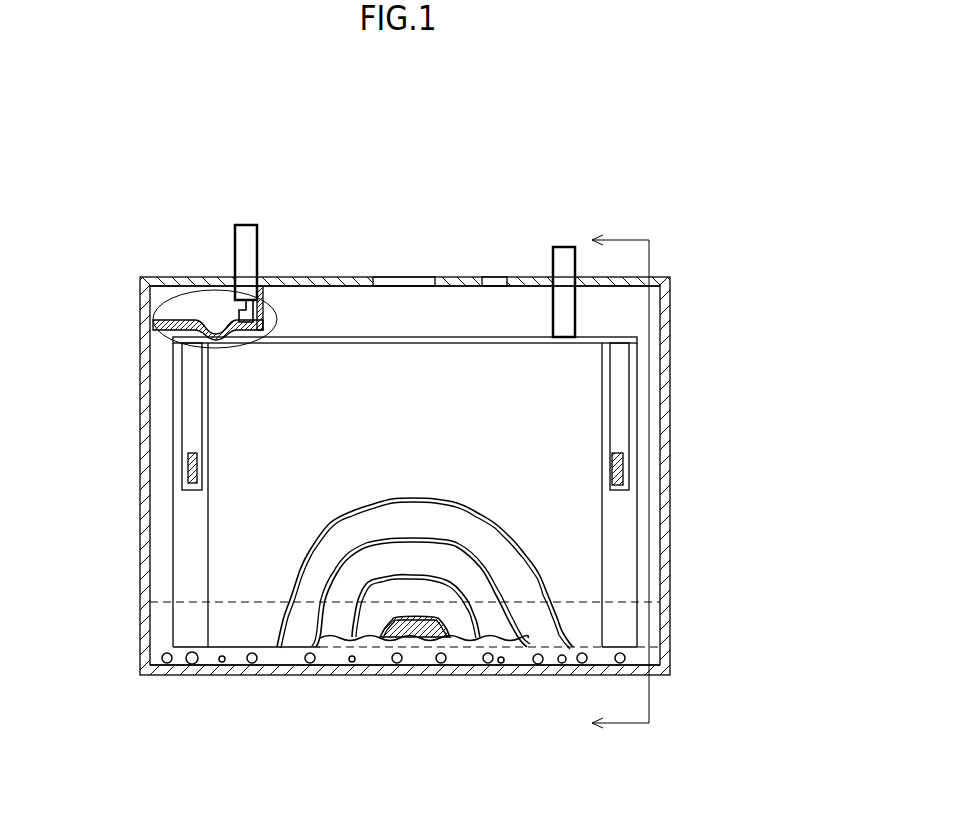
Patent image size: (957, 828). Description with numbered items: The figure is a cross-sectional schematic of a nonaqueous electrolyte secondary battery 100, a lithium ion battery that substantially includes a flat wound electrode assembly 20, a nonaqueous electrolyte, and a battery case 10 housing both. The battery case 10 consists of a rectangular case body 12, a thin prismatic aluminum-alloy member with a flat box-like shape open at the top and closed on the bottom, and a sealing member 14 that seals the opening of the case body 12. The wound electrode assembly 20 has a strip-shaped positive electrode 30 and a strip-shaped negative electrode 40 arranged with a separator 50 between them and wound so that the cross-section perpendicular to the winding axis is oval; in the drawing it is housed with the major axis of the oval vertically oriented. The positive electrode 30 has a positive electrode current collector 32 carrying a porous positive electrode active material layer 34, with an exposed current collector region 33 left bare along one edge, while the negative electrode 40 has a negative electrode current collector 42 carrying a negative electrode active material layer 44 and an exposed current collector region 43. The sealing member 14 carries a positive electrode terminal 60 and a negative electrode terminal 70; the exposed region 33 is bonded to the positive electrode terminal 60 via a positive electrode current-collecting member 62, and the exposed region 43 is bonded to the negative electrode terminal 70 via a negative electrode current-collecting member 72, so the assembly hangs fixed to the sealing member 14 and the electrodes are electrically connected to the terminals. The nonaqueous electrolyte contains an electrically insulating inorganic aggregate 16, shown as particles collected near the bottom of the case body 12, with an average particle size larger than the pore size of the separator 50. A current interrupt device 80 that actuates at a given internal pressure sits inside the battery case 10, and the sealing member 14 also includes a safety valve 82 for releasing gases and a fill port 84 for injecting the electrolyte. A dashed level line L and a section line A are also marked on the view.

The nonaqueous electrolyte secondary battery 100 is at (668, 177).
The battery case 10 is at (672, 440).
The case body 12 is at (672, 618).
The sealing member 14 is at (285, 277).
The inorganic aggregate 16 is at (533, 665).
The flat wound electrode assembly 20 is at (348, 367).
The positive electrode 30 is at (414, 638).
The positive electrode current collector 32 is at (190, 580).
The exposed current collector region 33 is at (119, 495).
The positive electrode active material layer 34 is at (297, 630).
The negative electrode 40 is at (416, 679).
The negative electrode current collector 42 is at (620, 548).
The exposed current collector region 43 is at (692, 495).
The negative electrode active material layer 44 is at (372, 623).
The separator 50 is at (238, 625).
The positive electrode terminal 60 is at (243, 226).
The positive electrode current-collecting member 62 is at (192, 405).
The negative electrode terminal 70 is at (563, 262).
The negative electrode current-collecting member 72 is at (617, 366).
The current interrupt device 80 is at (168, 297).
The safety valve 82 is at (420, 280).
The fill port 84 is at (495, 280).
The liquid level L is at (180, 605).
The section line A- A is at (632, 482).